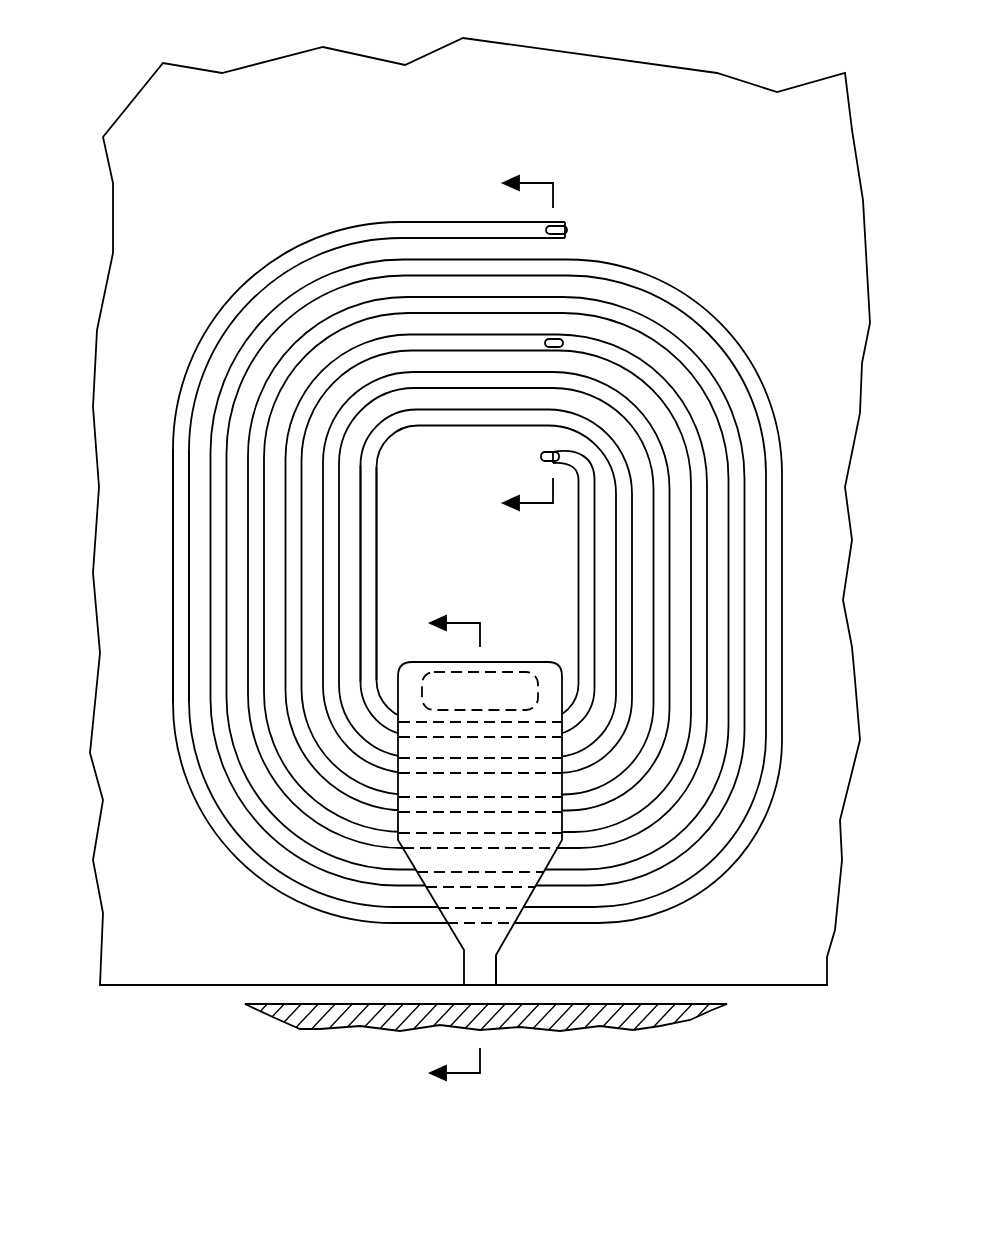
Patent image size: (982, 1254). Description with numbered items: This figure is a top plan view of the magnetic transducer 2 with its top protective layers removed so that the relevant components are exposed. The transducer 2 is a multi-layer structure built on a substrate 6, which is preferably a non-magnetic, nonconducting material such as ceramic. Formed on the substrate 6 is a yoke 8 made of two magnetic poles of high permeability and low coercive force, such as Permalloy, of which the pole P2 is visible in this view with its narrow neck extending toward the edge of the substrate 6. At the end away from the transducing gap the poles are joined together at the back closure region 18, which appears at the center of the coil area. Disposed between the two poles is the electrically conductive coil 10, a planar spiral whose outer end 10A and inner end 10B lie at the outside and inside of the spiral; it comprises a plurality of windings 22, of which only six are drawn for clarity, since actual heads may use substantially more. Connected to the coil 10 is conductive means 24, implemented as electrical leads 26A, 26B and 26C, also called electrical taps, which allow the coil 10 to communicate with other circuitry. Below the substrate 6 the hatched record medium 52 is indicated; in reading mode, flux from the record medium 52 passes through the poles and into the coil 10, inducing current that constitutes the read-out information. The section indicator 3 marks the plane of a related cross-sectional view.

The magnetic transducer 2 is at (74, 86).
The substrate 6 is at (252, 190).
The yoke 8 is at (488, 772).
The coil 10 is at (450, 590).
The coil 10A is at (173, 588).
The coil 10B is at (377, 558).
The back closure region 18 is at (500, 703).
The windings 22 is at (262, 822).
The conductive means 24 is at (589, 325).
The electrical lead 26A is at (574, 240).
The electrical lead 26B is at (578, 342).
The electrical lead 26C is at (495, 449).
The record medium 52 is at (697, 995).
The magnetic pole P2 is at (497, 963).
The section line 3- 3 is at (438, 853).